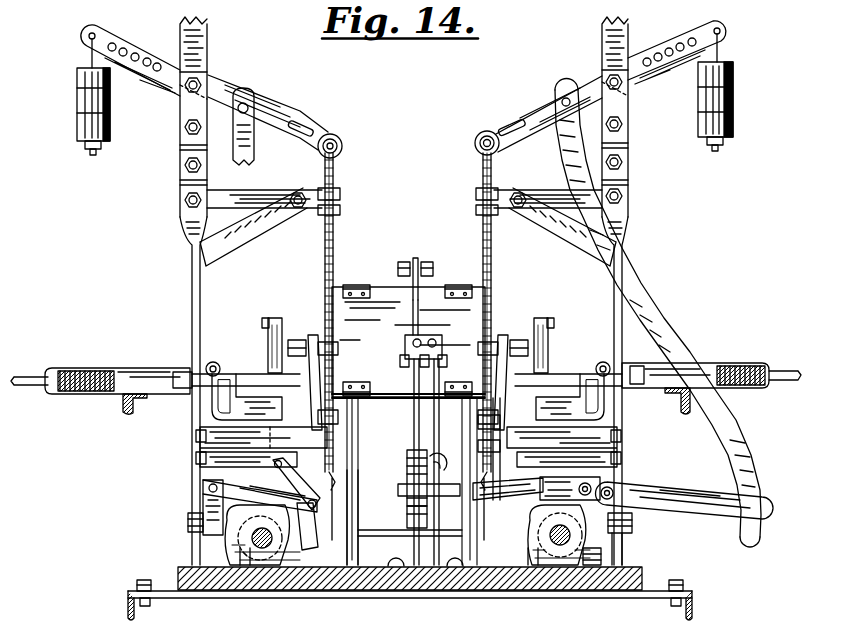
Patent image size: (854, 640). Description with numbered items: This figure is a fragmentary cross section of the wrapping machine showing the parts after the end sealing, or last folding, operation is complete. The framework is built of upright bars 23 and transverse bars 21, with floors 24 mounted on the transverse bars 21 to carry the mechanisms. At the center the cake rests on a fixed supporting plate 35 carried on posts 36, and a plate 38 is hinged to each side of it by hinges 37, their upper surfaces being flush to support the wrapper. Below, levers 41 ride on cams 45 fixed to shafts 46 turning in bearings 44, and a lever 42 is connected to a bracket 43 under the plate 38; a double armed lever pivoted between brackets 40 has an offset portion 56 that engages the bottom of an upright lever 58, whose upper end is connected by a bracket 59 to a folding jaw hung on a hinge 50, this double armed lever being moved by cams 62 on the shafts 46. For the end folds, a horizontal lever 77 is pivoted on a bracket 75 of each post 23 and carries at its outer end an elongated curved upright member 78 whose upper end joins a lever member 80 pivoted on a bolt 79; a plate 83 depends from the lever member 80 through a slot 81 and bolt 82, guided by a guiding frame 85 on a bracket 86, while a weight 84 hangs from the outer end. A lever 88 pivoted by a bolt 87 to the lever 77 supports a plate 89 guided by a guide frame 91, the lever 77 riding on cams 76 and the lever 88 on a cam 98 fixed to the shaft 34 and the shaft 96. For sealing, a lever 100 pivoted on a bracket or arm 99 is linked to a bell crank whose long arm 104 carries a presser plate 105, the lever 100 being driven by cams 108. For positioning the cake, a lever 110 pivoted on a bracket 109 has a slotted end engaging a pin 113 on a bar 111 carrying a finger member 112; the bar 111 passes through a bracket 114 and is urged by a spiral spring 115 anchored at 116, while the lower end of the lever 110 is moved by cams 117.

The transverse bars 21 is at (122, 411).
The upright bars 23 is at (208, 44).
The floors 24 is at (371, 577).
The shaft 34 is at (560, 546).
The fixed supporting plate 35 is at (383, 400).
The posts 36 is at (358, 478).
The hinges 37 is at (355, 380).
The plate 38 is at (408, 342).
The brackets 40 is at (406, 518).
The levers 41 is at (449, 468).
The lever 42 is at (470, 424).
The bracket 43 is at (440, 354).
The bearings 44 is at (530, 570).
The cams 45 is at (438, 580).
The shafts 46 is at (357, 550).
The hinge 50 is at (356, 284).
The offset portion 56 is at (406, 472).
The upright lever 58 is at (420, 305).
The bracket 59 is at (410, 262).
The cams 62 is at (417, 580).
The bracket 75 is at (630, 530).
The cams 76 is at (595, 568).
The horizontal lever 77 is at (680, 497).
The elongated curved upright member 78 is at (250, 93).
The bolt 79 is at (188, 87).
The lever member 80 is at (141, 54).
The slot 81 is at (305, 130).
The bolt 82 is at (476, 141).
The plate 83 is at (324, 250).
The weight 84 is at (79, 113).
The guiding frame 85 is at (335, 187).
The bracket 86 is at (255, 196).
The bolt 87 is at (616, 477).
The lever 88 is at (510, 500).
The plate 89 is at (492, 380).
The guide frame 91 is at (487, 432).
The shaft 96 is at (262, 549).
The cam 98 is at (536, 534).
The bracket or arm 99 is at (187, 522).
The lever 100 is at (203, 500).
The long arm 104 is at (313, 340).
The presser plate 105 is at (297, 339).
The cams 108 is at (232, 524).
The bracket 109 is at (200, 446).
The lever 110 is at (220, 400).
The bar 111 is at (247, 374).
The finger member 112 is at (270, 317).
The pin 113 is at (215, 362).
The bracket 114 is at (145, 367).
The spiral spring 115 is at (56, 370).
The spring anchorage 116 is at (115, 369).
The cams 117 is at (244, 578).